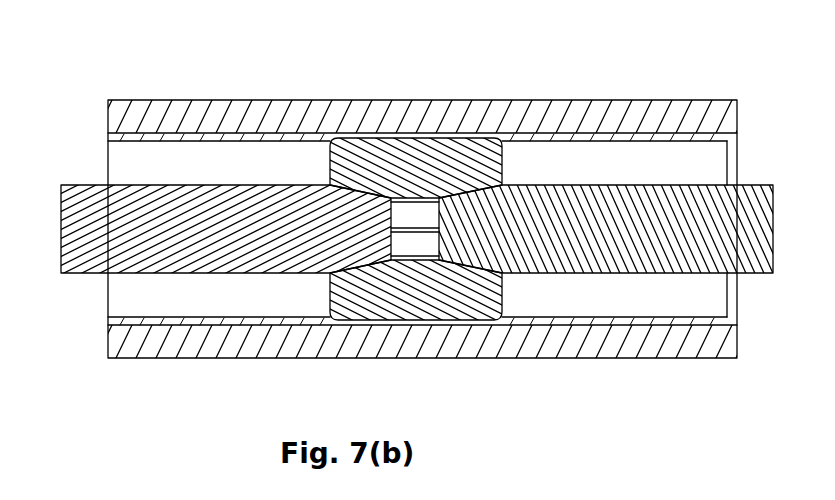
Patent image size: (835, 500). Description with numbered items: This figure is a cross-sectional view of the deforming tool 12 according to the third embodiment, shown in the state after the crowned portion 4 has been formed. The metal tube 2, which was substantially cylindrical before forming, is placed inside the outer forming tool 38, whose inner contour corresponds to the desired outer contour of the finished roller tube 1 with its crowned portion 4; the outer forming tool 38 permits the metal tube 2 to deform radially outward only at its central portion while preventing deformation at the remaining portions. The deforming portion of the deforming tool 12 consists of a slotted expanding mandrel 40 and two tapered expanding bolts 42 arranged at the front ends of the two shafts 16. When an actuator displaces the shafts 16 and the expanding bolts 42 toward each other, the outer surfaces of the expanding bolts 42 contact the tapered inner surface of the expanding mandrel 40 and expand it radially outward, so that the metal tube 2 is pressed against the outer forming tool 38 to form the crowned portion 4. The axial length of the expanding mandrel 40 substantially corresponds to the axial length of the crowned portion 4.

The deforming tool 12 is at (77, 163).
The roller tube 1 is at (182, 136).
The outer forming tool 38 is at (630, 122).
The metal tube 2 is at (700, 133).
The crowned portion 4 is at (413, 135).
The shafts 16 is at (97, 245).
The tapered expanding bolts 42 is at (355, 205).
The slotted expanding mandrel 40 is at (456, 283).